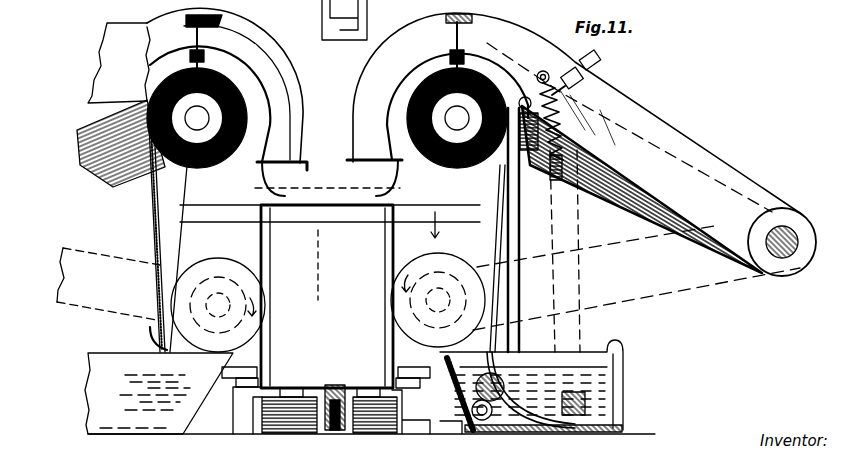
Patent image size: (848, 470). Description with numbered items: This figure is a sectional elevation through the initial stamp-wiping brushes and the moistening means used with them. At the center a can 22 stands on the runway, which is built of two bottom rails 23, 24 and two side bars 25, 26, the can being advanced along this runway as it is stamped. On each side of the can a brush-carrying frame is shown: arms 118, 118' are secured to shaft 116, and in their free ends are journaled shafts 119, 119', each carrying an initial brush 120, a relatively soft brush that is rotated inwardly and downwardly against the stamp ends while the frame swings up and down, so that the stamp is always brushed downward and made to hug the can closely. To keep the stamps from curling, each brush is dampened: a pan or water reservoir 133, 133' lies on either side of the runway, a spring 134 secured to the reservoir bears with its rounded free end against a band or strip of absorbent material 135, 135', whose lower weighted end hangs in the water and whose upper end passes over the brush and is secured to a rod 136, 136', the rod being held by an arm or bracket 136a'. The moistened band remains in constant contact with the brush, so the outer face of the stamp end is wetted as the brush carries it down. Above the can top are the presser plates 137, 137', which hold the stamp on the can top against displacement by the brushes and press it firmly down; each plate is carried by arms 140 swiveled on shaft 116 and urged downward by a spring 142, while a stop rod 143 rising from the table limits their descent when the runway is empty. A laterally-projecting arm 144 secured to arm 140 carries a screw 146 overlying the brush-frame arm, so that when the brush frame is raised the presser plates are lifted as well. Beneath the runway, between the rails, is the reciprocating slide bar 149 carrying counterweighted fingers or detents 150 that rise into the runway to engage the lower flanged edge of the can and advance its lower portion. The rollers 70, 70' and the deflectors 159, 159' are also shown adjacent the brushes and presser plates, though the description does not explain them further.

The can 22 is at (327, 296).
The bottom rail 23 is at (292, 397).
The bottom rail 24 is at (368, 397).
The side bar 25 is at (249, 388).
The side bar 26 is at (413, 388).
The roller 70 is at (438, 277).
The roller 70' is at (218, 279).
The shaft 116 is at (785, 256).
The arm 118 is at (642, 189).
The arm 118' is at (121, 152).
The shaft 119 is at (447, 103).
The shaft 119' is at (197, 112).
The initial brush 120 is at (466, 160).
The pan or water reservoir 133 is at (555, 386).
The pan or water reservoir 133' is at (159, 393).
The spring 134 is at (548, 418).
The band or strip of absorbent material 135 is at (496, 230).
The band or strip of absorbent material 135' is at (133, 228).
The rod 136 is at (492, 32).
The rod 136' is at (218, 51).
The arm or bracket 136a' is at (234, 16).
The presser plate 137 is at (359, 143).
The presser plate 137' is at (292, 174).
The arm 140 is at (653, 115).
The spring 142 is at (578, 333).
The stop rod 143 is at (527, 296).
The laterally-projecting arm 144 is at (590, 79).
The screw 146 is at (602, 63).
The slide bar 149 is at (330, 417).
The finger or detent 150 is at (318, 392).
The deflector 159 is at (404, 180).
The deflector 159' is at (257, 180).